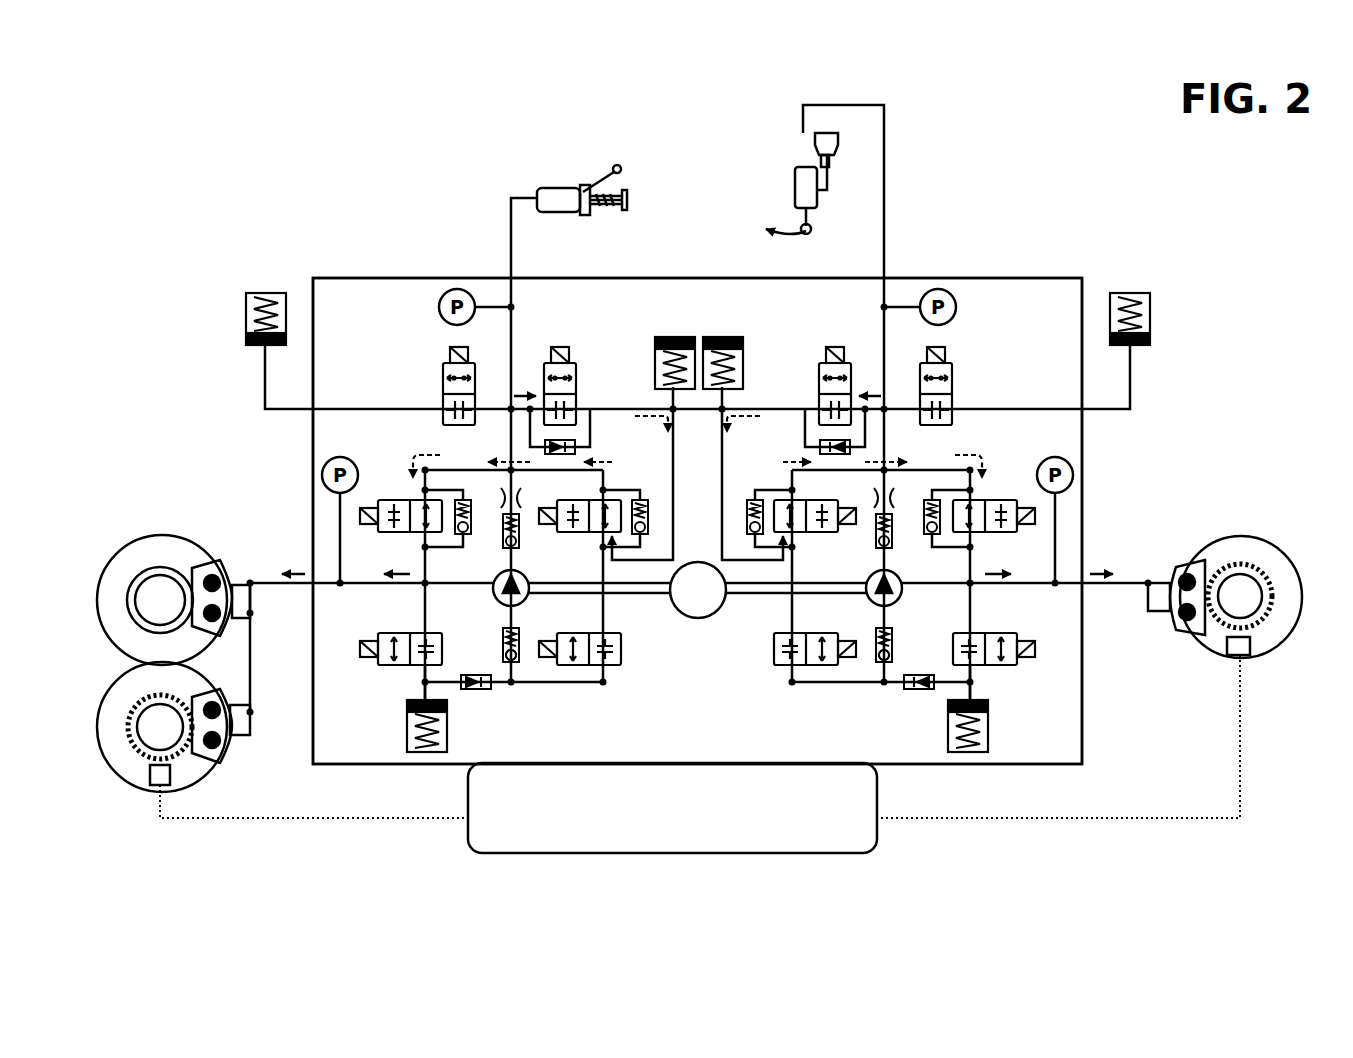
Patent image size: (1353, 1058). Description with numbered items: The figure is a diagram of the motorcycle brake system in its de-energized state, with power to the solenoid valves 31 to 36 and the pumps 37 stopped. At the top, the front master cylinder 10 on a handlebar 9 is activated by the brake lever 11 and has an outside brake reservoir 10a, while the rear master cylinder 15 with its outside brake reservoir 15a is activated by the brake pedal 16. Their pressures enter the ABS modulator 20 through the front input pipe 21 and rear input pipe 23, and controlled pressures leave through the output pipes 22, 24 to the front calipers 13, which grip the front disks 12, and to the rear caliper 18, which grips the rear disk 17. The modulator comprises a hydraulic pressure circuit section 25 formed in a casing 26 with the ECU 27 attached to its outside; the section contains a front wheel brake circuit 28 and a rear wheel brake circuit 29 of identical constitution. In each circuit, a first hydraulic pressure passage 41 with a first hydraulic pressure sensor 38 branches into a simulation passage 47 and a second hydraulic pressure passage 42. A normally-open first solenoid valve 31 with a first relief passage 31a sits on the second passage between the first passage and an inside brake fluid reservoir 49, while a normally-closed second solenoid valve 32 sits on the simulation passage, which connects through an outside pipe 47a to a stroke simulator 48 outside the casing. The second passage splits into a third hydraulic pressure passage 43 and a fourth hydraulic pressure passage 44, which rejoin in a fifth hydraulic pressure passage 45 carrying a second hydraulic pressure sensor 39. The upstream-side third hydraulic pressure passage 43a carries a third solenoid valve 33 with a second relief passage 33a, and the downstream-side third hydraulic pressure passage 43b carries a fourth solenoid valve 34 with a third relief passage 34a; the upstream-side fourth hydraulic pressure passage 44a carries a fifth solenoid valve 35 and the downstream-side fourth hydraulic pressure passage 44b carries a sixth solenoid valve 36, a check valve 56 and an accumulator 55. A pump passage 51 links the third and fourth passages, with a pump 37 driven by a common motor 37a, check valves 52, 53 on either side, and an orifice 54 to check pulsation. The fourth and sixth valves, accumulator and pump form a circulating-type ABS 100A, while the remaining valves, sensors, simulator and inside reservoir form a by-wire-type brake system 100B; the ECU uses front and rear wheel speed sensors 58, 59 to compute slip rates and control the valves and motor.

The handlebar 9 is at (609, 213).
The front master cylinder 10 is at (555, 174).
The outside brake reservoir 10a is at (556, 185).
The brake lever 11 is at (600, 170).
The front disk 12 is at (132, 551).
The front caliper 13 is at (226, 570).
The rear master cylinder 15 is at (794, 189).
The outside brake reservoir 15a is at (814, 146).
The brake pedal 16 is at (770, 225).
The rear disk 17 is at (1242, 538).
The rear caliper 18 is at (1182, 628).
The ABS modulator 20 is at (701, 474).
The front input pipe 21 is at (509, 226).
The front output pipe 22 is at (290, 586).
The rear input pipe 23 is at (886, 210).
The rear output pipe 24 is at (1121, 586).
The hydraulic pressure circuit section 25 is at (1011, 265).
The casing 26 is at (1064, 276).
The ECU 27 is at (878, 836).
The front wheel brake circuit 28 is at (388, 353).
The rear wheel brake circuit 29 is at (1003, 353).
The first solenoid valve 31 is at (578, 375).
The first relief passage 31a is at (543, 447).
The second solenoid valve 32 is at (441, 390).
The third solenoid valve 33 is at (594, 534).
The second relief passage 33a is at (640, 489).
The fourth solenoid valve 34 is at (404, 534).
The third relief passage 34a is at (701, 542).
The fifth solenoid valve 35 is at (568, 632).
The sixth solenoid valve 36 is at (397, 632).
The pump 37 is at (492, 592).
The motor 37a is at (698, 619).
The first hydraulic pressure sensor 38 is at (438, 307).
The second hydraulic pressure sensor 39 is at (340, 456).
The first hydraulic pressure passage 41 is at (513, 325).
The second hydraulic pressure passage 42 is at (621, 407).
The third hydraulic pressure passage 43 is at (703, 447).
The upstream-side third hydraulic pressure passage 43a is at (697, 439).
The downstream-side third hydraulic pressure passage 43b is at (682, 453).
The fourth hydraulic pressure passage 44 is at (702, 698).
The upstream-side fourth hydraulic pressure passage 44a is at (582, 690).
The downstream-side fourth hydraulic pressure passage 44b is at (414, 674).
The fifth hydraulic pressure passage 45 is at (357, 586).
The simulation passage 47 is at (342, 407).
The outside pipe 47a is at (264, 388).
The stroke simulator 48 is at (244, 311).
The inside brake fluid reservoir 49 is at (656, 348).
The pump passage 51 is at (503, 634).
The check valve 52 is at (504, 648).
The check valve 53 is at (503, 536).
The orifice 54 is at (519, 500).
The accumulator 55 is at (405, 738).
The check valve 56 is at (480, 693).
The front wheel speed sensor 58 is at (150, 779).
The rear wheel speed sensor 59 is at (1251, 652).
The circulating-type ABS 100A is at (334, 768).
The by-wire-type brake system 100B is at (305, 264).